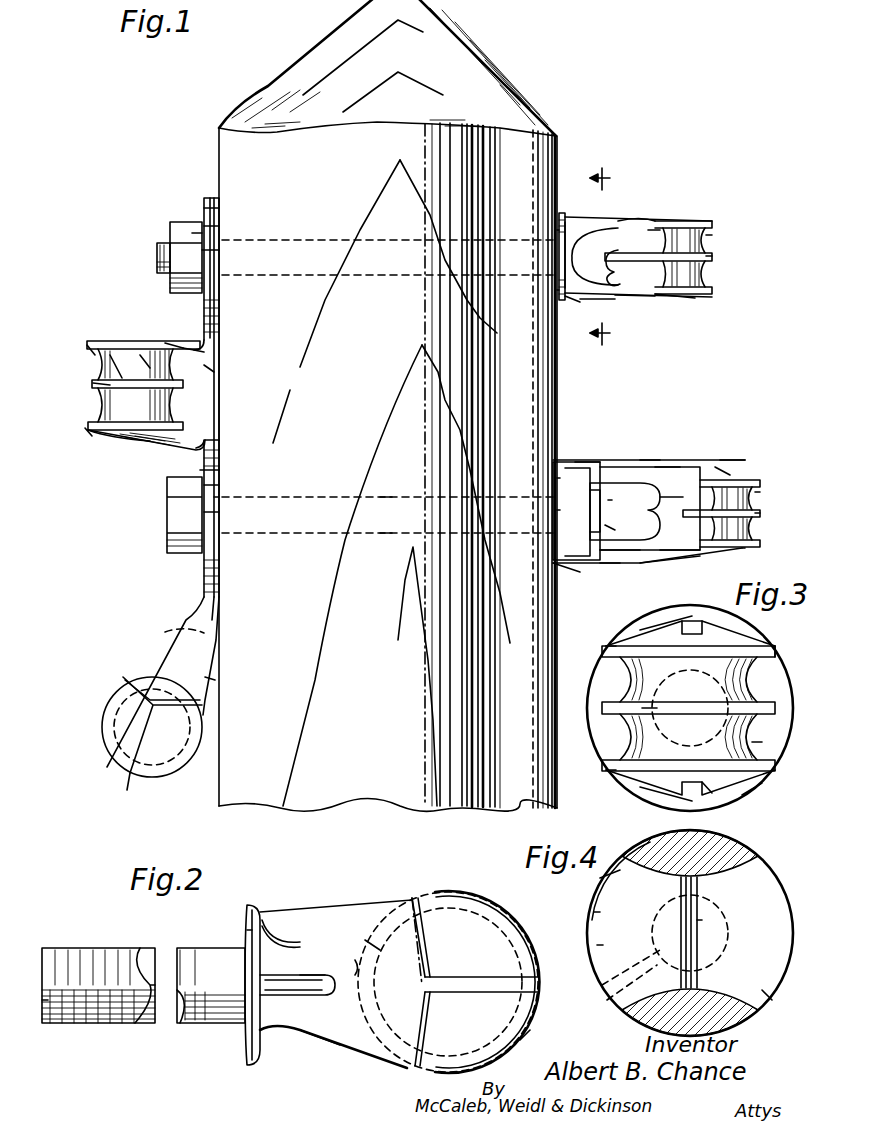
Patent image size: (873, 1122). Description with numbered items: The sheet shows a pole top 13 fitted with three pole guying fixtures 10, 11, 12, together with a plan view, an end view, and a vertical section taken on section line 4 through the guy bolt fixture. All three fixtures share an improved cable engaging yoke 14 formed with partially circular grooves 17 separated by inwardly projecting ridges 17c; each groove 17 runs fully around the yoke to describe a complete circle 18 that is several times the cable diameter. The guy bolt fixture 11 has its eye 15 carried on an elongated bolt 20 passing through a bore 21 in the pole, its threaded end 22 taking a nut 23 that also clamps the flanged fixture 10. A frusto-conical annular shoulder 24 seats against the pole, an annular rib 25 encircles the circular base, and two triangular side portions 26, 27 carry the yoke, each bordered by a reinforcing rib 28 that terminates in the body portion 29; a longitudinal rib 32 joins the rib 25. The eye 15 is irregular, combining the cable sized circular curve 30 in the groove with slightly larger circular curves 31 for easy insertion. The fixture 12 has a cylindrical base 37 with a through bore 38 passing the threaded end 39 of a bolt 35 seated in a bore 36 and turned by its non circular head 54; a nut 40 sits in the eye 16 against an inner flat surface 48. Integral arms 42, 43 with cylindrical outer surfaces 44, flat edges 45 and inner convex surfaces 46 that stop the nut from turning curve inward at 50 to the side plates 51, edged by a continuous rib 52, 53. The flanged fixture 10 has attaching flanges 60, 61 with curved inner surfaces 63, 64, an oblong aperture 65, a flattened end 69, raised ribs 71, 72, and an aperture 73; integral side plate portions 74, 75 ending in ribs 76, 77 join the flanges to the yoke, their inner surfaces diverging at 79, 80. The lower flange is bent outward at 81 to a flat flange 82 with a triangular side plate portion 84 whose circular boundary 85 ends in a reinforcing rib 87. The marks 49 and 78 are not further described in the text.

In FIG. 1, the guying fixture 10 is at (124, 335).
In FIG. 1, the guy bolt fixture 11 is at (604, 240).
In FIG. 2, the guy bolt fixture 11 is at (271, 909).
In FIG. 3, the guy bolt fixture 11 is at (784, 690).
In FIG. 4, the guy bolt fixture 11 is at (768, 880).
In FIG. 1, the guying fixture 12 is at (690, 468).
In FIG. 1, the pole top 13 is at (518, 150).
In FIG. 1, the cable engaging yoke 14 is at (115, 372).
In FIG. 2, the cable engaging yoke 14 is at (520, 1043).
In FIG. 3, the cable engaging yoke 14 is at (632, 680).
In FIG. 1, the eye 15 is at (662, 232).
In FIG. 4, the eye 15 is at (710, 920).
In FIG. 1, the eye 16 is at (660, 470).
In FIG. 1, the grooves 17 is at (148, 365).
In FIG. 3, the grooves 17 is at (754, 740).
In FIG. 1, the ridges 17c is at (100, 388).
In FIG. 2, the ridges 17c is at (355, 966).
In FIG. 3, the ridges 17c is at (662, 731).
In FIG. 2, the circle 18 is at (492, 920).
In FIG. 1, the elongated bolt 20 is at (386, 248).
In FIG. 2, the elongated bolt 20 is at (112, 1023).
In FIG. 3, the elongated bolt 20 is at (690, 708).
In FIG. 4, the elongated bolt 20 is at (605, 987).
In FIG. 1, the bore 21 is at (330, 248).
In FIG. 1, the threaded end 22 is at (157, 253).
In FIG. 2, the threaded end 22 is at (45, 1010).
In FIG. 1, the nut 23 is at (172, 230).
In FIG. 1, the annular shoulder 24 is at (555, 264).
In FIG. 2, the annular shoulder 24 is at (245, 930).
In FIG. 3, the annular shoulder 24 is at (744, 795).
In FIG. 4, the annular shoulder 24 is at (602, 944).
In FIG. 1, the annular rib 25 is at (562, 222).
In FIG. 2, the annular rib 25 is at (255, 1066).
In FIG. 3, the annular rib 25 is at (779, 664).
In FIG. 4, the annular rib 25 is at (597, 912).
In FIG. 1, the triangular side portion 26 is at (640, 220).
In FIG. 2, the triangular side portion 26 is at (335, 1002).
In FIG. 3, the triangular side portion 26 is at (695, 626).
In FIG. 4, the triangular side portion 26 is at (737, 852).
In FIG. 1, the triangular side portion 27 is at (640, 300).
In FIG. 3, the triangular side portion 27 is at (710, 795).
In FIG. 4, the triangular side portion 27 is at (745, 1015).
In FIG. 1, the reinforcing rib 28 is at (690, 296).
In FIG. 2, the reinforcing rib 28 is at (465, 899).
In FIG. 3, the reinforcing rib 28 is at (607, 646).
In FIG. 4, the reinforcing rib 28 is at (605, 880).
In FIG. 1, the body portion 29 is at (572, 302).
In FIG. 2, the body portion 29 is at (275, 935).
In FIG. 4, the body portion 29 is at (655, 947).
In FIG. 1, the circular curve 30 is at (660, 295).
In FIG. 2, the circular curve 30 is at (372, 940).
In FIG. 1, the circular curves 31 is at (615, 248).
In FIG. 4, the circular curves 31 is at (692, 940).
In FIG. 1, the longitudinal reinforcing rib 32 is at (578, 250).
In FIG. 2, the longitudinal reinforcing rib 32 is at (278, 985).
In FIG. 1, the bolt 35 is at (387, 492).
In FIG. 1, the bore 36 is at (380, 535).
In FIG. 1, the base 37 is at (566, 470).
In FIG. 1, the through bore 38 is at (558, 512).
In FIG. 1, the threaded end 39 is at (612, 506).
In FIG. 1, the nut 40 is at (600, 485).
In FIG. 1, the arm 42 is at (582, 440).
In FIG. 1, the arm 43 is at (583, 575).
In FIG. 1, the cylindrical outer surface 44 is at (640, 456).
In FIG. 1, the flat edges 45 is at (642, 490).
In FIG. 1, the inner convex surface 46 is at (632, 556).
In FIG. 1, the inner flat surface 48 is at (612, 528).
In FIG. 1, the bolt hole 49 is at (560, 480).
In FIG. 1, the inward curve 50 is at (682, 556).
In FIG. 1, the side plates 51 is at (732, 468).
In FIG. 1, the rib 52 is at (722, 476).
In FIG. 1, the rib 53 is at (750, 546).
In FIG. 1, the non-circular head 54 is at (182, 520).
In FIG. 1, the attaching flange 60 is at (220, 205).
In FIG. 1, the attaching flange 61 is at (200, 470).
In FIG. 1, the curved inner surface 63 is at (205, 228).
In FIG. 1, the curved inner surface 64 is at (214, 487).
In FIG. 1, the oblong aperture 65 is at (192, 235).
In FIG. 1, the flattened end 69 is at (204, 213).
In FIG. 1, the raised rib 71 is at (220, 252).
In FIG. 1, the raised rib 72 is at (218, 512).
In FIG. 1, the aperture 73 is at (235, 505).
In FIG. 1, the side plate portion 74 is at (173, 341).
In FIG. 1, the side plate portion 75 is at (200, 430).
In FIG. 1, the rib 76 is at (88, 350).
In FIG. 1, the rib 77 is at (85, 435).
In FIG. 1, the bend 78 is at (216, 372).
In FIG. 1, the diverging inner surface 79 is at (226, 432).
In FIG. 1, the diverging inner surface 80 is at (214, 356).
In FIG. 1, the outward bend 81 is at (208, 616).
In FIG. 1, the flat flange 82 is at (160, 630).
In FIG. 1, the triangular side plate portion 84 is at (140, 665).
In FIG. 1, the circular boundary 85 is at (133, 785).
In FIG. 1, the reinforcing rib 87 is at (122, 770).
In FIG. 1, the section line 4 is at (609, 256).